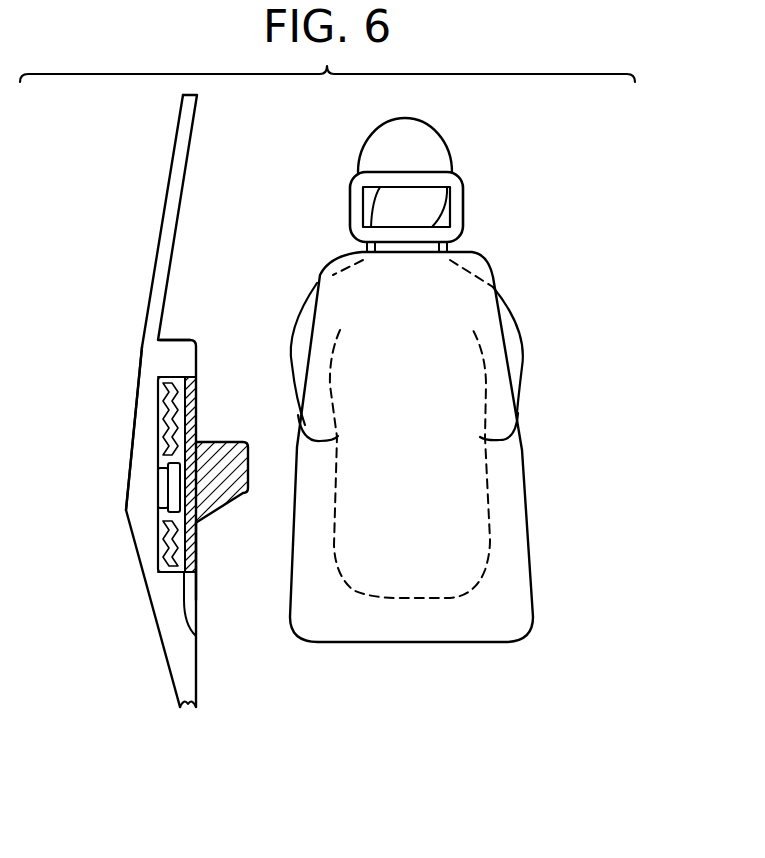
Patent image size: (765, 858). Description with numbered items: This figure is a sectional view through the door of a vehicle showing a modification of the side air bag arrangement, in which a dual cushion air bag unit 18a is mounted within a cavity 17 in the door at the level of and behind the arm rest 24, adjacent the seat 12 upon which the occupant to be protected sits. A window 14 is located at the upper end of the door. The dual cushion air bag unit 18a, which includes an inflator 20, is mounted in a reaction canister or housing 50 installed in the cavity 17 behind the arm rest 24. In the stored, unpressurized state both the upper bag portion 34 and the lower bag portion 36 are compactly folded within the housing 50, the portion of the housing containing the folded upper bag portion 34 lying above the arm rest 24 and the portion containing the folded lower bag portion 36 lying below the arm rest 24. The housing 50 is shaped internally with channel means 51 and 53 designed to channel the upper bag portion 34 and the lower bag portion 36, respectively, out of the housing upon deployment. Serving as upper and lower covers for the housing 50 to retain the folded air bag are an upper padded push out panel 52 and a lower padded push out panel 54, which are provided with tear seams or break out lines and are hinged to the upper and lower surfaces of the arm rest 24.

The seat 12 is at (515, 535).
The window 14 is at (173, 190).
The cavity 17 is at (150, 468).
The dual cushion air bag unit 18a is at (150, 522).
The inflator 20 is at (157, 492).
The arm rest 24 is at (235, 493).
The upper bag portion 34 is at (158, 388).
The lower bag portion 36 is at (160, 548).
The housing 50 is at (160, 420).
The channel means 51 is at (176, 385).
The upper padded push out panel 52 is at (196, 400).
The channel means 53 is at (197, 633).
The lower padded push out panel 54 is at (197, 560).